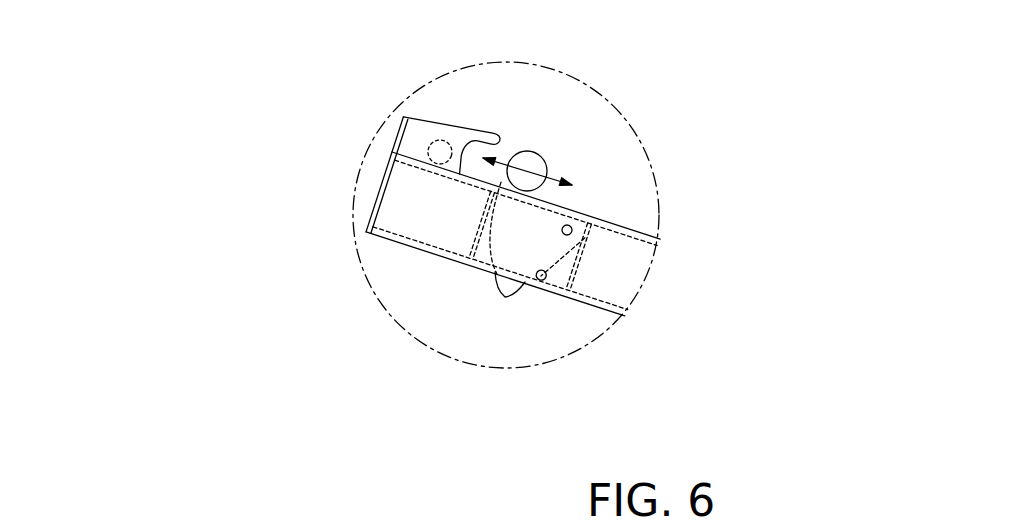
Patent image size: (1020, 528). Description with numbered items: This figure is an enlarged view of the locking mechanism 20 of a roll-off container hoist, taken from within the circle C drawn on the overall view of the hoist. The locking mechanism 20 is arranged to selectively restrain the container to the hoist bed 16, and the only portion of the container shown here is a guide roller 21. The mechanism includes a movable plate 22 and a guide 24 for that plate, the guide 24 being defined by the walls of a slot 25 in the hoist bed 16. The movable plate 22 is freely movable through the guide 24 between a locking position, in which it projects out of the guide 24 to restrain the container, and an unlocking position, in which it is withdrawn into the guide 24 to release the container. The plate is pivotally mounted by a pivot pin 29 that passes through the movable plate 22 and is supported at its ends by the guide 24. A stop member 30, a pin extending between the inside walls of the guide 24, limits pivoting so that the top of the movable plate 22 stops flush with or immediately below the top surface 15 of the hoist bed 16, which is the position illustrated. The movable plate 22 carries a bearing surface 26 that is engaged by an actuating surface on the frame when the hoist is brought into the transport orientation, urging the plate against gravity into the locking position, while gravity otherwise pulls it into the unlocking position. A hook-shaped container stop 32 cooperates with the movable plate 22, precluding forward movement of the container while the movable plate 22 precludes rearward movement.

The circle C is at (363, 272).
The top surface 15 is at (617, 217).
The hoist bed 16 is at (635, 231).
The locking mechanism 20 is at (455, 277).
The guide roller 21 is at (541, 157).
The movable plate 22 is at (487, 272).
The guide 24 is at (573, 210).
The slot 25 is at (532, 287).
The bearing surface 26 is at (498, 293).
The pivot pin 29 is at (571, 227).
The stop member 30 is at (544, 279).
The container stop 32 is at (440, 126).